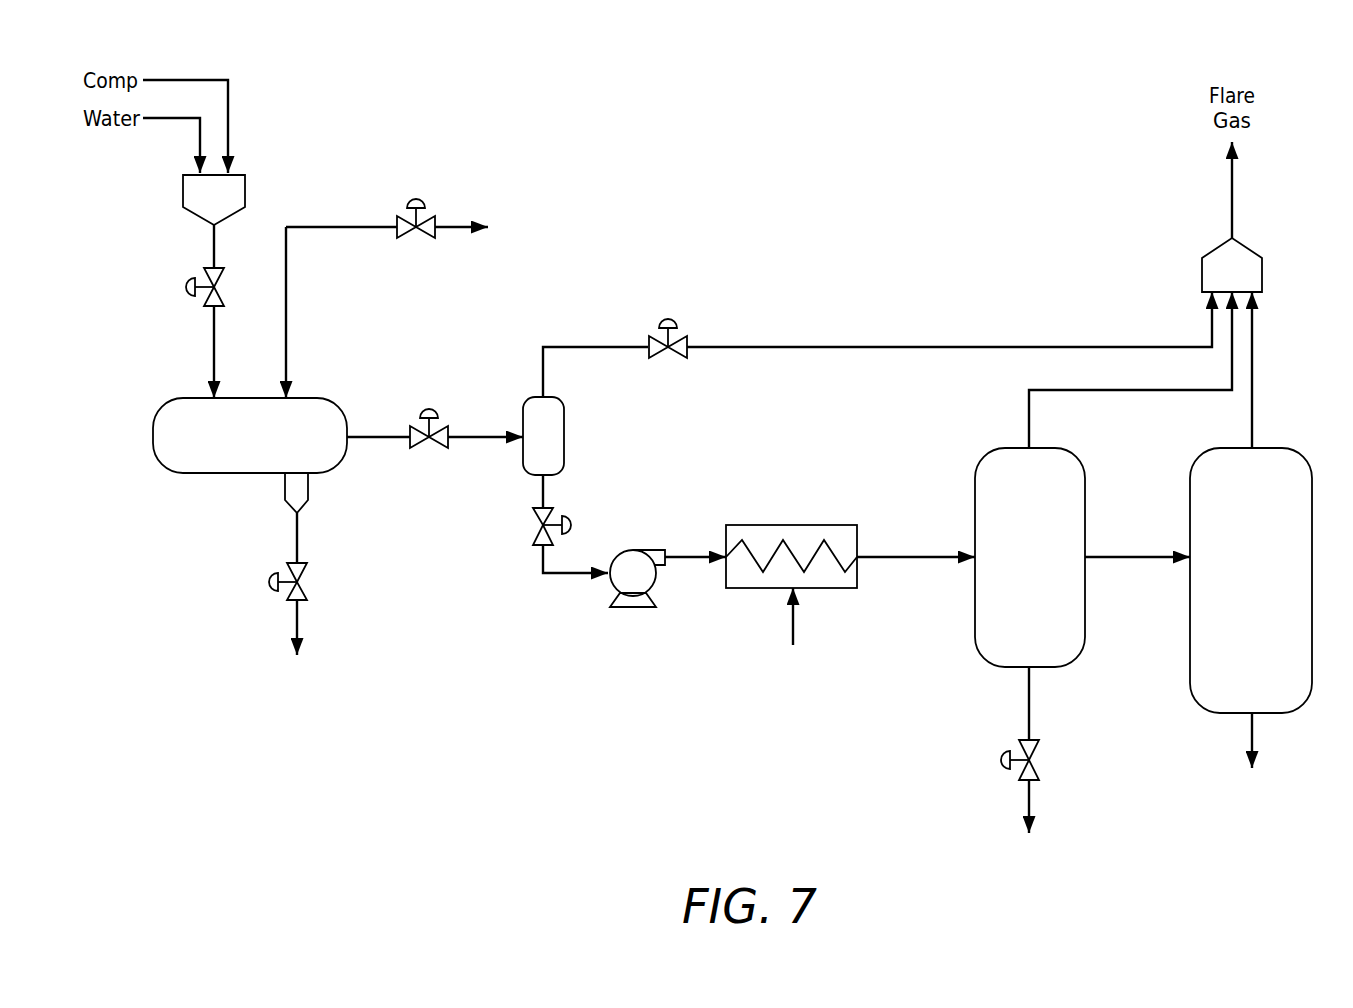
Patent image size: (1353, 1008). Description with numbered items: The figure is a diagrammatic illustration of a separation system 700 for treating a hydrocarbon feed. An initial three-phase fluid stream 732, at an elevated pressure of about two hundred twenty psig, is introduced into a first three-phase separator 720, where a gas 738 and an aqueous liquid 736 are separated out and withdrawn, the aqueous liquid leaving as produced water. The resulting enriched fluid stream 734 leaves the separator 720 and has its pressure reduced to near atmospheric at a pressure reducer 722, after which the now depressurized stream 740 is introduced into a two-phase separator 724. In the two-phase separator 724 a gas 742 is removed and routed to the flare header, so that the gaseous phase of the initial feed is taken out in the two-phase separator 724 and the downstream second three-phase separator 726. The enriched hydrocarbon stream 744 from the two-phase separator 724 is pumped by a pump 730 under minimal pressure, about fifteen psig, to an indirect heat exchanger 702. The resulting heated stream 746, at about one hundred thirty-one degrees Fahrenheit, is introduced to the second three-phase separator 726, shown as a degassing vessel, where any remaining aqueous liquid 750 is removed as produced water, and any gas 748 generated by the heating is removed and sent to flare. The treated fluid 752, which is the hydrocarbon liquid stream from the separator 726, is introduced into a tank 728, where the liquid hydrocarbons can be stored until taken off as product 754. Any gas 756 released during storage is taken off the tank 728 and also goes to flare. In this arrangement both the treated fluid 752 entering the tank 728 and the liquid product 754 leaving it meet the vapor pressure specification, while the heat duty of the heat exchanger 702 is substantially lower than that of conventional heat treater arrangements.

The separation system 700 is at (1161, 54).
The indirect heat exchanger 702 is at (766, 523).
The first three-phase separator 720 is at (153, 430).
The pressure reducer 722 is at (429, 405).
The two-phase separator 724 is at (564, 440).
The second three-phase separator 726 is at (975, 625).
The tank 728 is at (1190, 672).
The pump 730 is at (633, 548).
The initial three-phase fluid stream 732 is at (213, 352).
The enriched fluid stream 734 is at (379, 440).
The aqueous liquid 736 is at (297, 540).
The gas 738 is at (286, 347).
The depressurized stream 740 is at (480, 440).
The gas 742 is at (595, 345).
The enriched hydrocarbon stream 744 is at (562, 575).
The heated stream 746 is at (878, 553).
The gas 748 is at (1133, 393).
The aqueous liquid 750 is at (1029, 805).
The treated fluid 752 is at (1133, 553).
The product 754 is at (1247, 740).
The gas 756 is at (1254, 363).